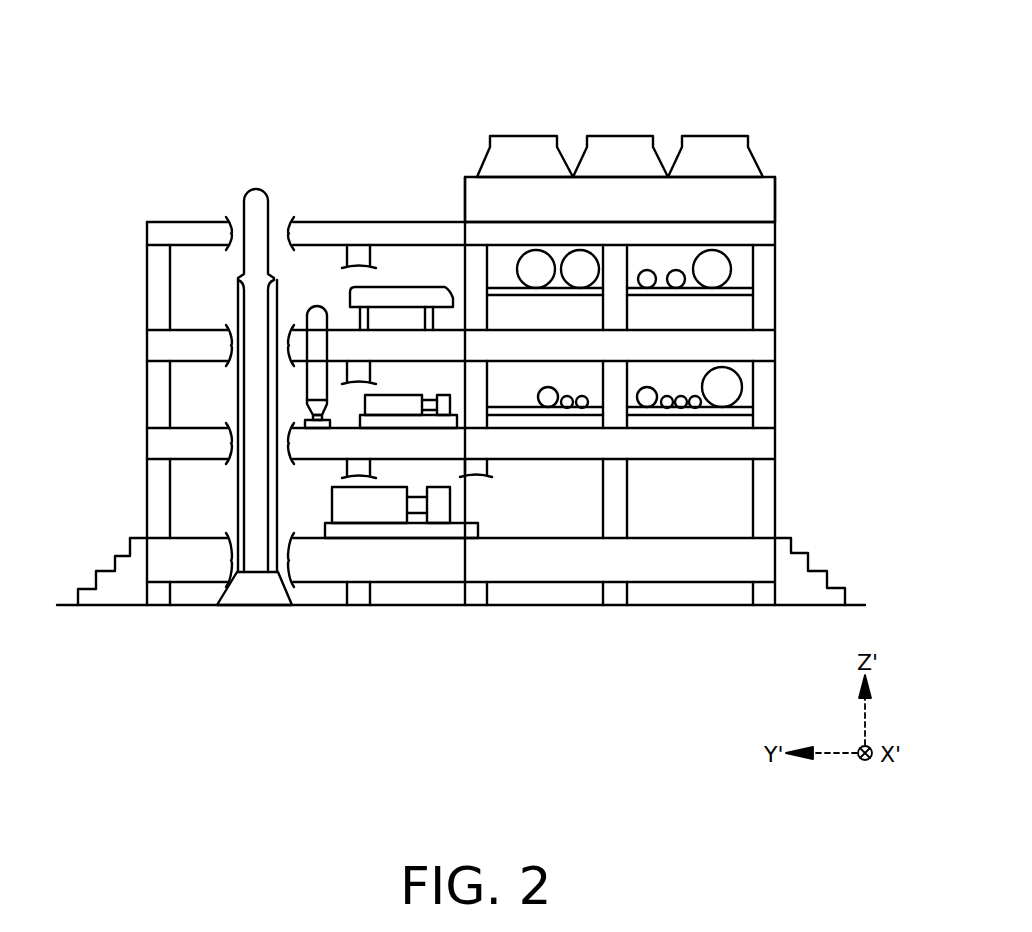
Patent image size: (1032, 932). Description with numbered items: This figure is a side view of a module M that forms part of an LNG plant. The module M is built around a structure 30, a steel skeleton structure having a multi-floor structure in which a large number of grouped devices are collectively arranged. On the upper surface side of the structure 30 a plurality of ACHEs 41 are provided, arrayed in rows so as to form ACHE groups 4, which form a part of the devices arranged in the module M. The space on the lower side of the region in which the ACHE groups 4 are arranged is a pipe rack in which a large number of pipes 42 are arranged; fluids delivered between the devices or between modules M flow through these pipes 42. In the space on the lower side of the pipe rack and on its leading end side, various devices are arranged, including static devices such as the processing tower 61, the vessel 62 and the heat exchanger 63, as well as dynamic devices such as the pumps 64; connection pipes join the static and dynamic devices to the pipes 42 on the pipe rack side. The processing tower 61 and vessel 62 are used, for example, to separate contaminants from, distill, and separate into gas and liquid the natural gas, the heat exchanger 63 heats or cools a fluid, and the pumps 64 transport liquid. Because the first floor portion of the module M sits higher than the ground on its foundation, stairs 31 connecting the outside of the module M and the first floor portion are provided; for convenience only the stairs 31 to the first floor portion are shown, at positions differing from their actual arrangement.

The module M is at (758, 64).
The ACHE group 4 is at (712, 79).
The ACHE 41 is at (618, 136).
The pipes 42 is at (731, 269).
The structure 30 is at (147, 291).
The stairs 31 is at (121, 558).
The processing tower 61 is at (236, 392).
The vessel 62 is at (305, 336).
The heat exchanger 63 is at (388, 287).
The pumps 64 is at (400, 408).